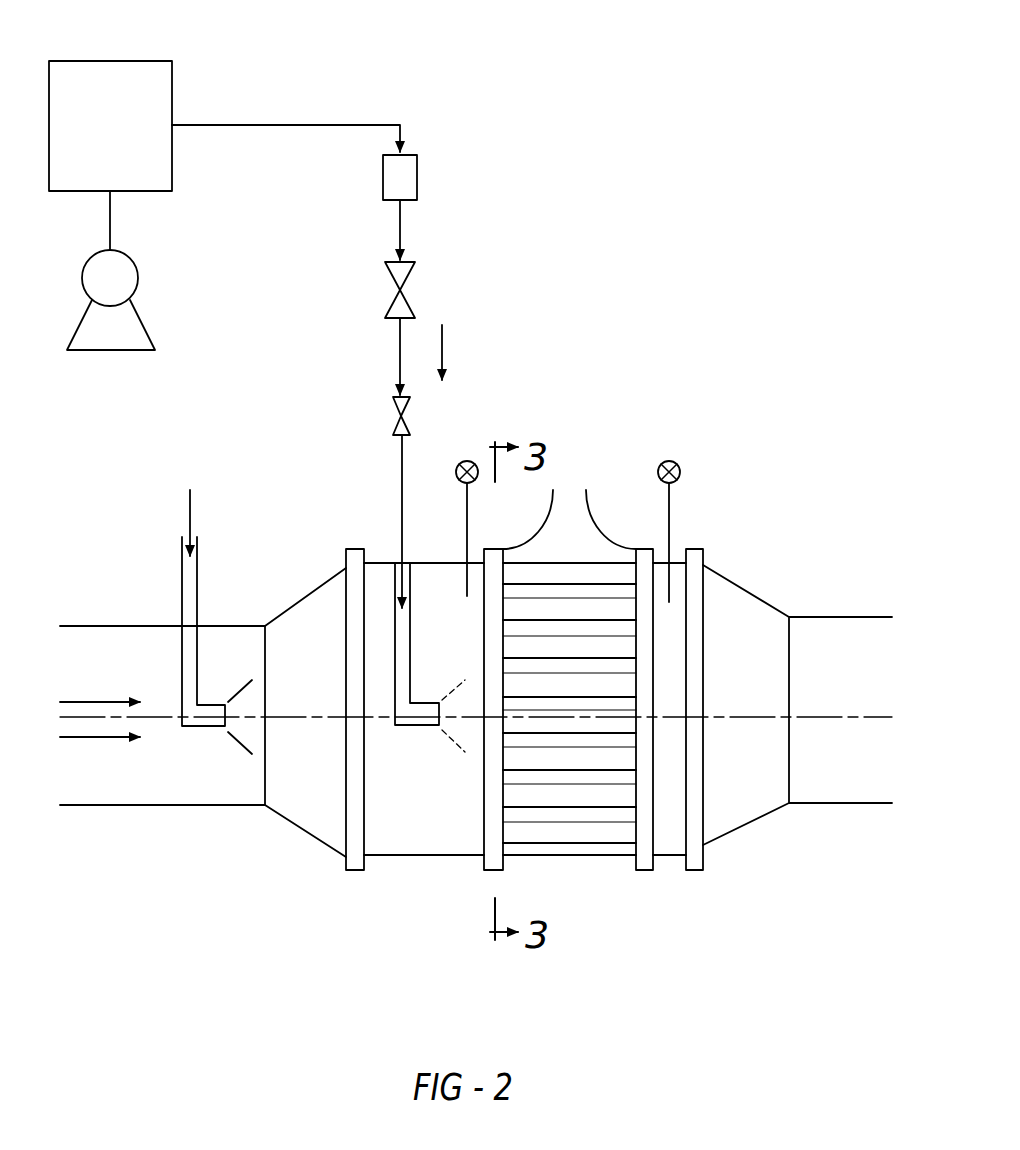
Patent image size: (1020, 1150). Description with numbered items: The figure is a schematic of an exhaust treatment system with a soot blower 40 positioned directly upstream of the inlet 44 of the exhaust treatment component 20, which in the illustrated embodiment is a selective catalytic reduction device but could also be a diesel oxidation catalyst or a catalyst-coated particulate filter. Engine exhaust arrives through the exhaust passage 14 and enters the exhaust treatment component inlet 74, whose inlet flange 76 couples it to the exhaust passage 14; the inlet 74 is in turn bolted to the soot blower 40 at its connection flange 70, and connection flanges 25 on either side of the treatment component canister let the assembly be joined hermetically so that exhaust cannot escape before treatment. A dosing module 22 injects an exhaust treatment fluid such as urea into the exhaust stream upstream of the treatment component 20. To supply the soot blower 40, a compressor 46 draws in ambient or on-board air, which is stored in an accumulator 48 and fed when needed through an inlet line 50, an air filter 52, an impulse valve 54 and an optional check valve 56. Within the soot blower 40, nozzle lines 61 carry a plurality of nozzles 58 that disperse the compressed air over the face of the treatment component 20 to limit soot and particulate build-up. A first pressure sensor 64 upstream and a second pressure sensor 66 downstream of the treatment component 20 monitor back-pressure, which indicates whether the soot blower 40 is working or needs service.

The exhaust passage 14 is at (117, 805).
The exhaust treatment component 20 is at (568, 860).
The dosing module 22 is at (197, 590).
The connection flanges 25 is at (489, 822).
The soot blower 40 is at (411, 858).
The inlet 44 is at (483, 798).
The compressor 46 is at (140, 328).
The accumulator 48 is at (145, 61).
The inlet line 50 is at (330, 125).
The air filter 52 is at (417, 168).
The impulse valve 54 is at (413, 280).
The check valve 56 is at (393, 426).
The nozzles 58 is at (428, 728).
The nozzle lines 61 is at (411, 658).
The first pressure sensor 64 is at (457, 467).
The second pressure sensor 66 is at (681, 470).
The connection flange 70 is at (360, 820).
The exhaust treatment component inlet 74 is at (318, 810).
The inlet flange 76 is at (265, 777).